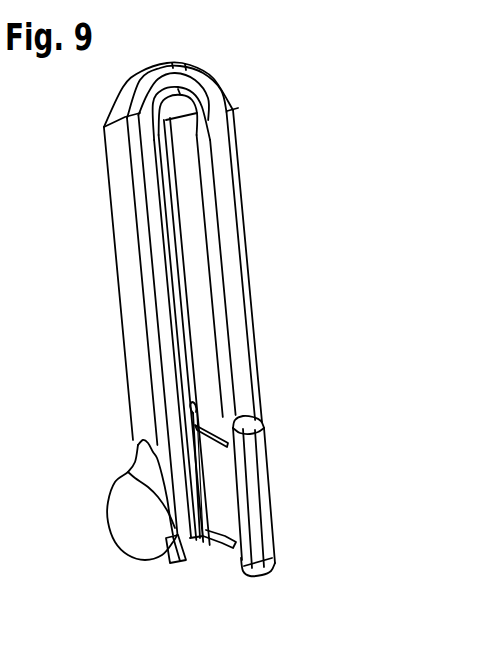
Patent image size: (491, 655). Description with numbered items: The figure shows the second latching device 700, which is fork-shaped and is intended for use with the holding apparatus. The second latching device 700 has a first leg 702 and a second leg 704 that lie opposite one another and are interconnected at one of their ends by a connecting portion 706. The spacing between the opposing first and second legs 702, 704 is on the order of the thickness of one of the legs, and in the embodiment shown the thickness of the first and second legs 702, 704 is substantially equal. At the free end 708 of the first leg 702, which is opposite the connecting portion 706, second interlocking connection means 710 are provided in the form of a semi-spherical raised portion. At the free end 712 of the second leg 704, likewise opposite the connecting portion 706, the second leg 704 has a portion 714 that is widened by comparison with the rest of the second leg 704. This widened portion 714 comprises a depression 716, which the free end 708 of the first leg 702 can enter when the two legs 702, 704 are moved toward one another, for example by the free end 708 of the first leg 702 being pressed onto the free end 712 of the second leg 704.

The second latching device 700 is at (194, 328).
The first leg 702 is at (135, 333).
The second leg 704 is at (238, 322).
The connecting portion 706 is at (190, 93).
The free end of the first leg 708 is at (185, 558).
The second interlocking connection means 710 is at (125, 520).
The free end of the second leg 712 is at (265, 576).
The widened portion 714 is at (293, 530).
The depression 716 is at (228, 517).